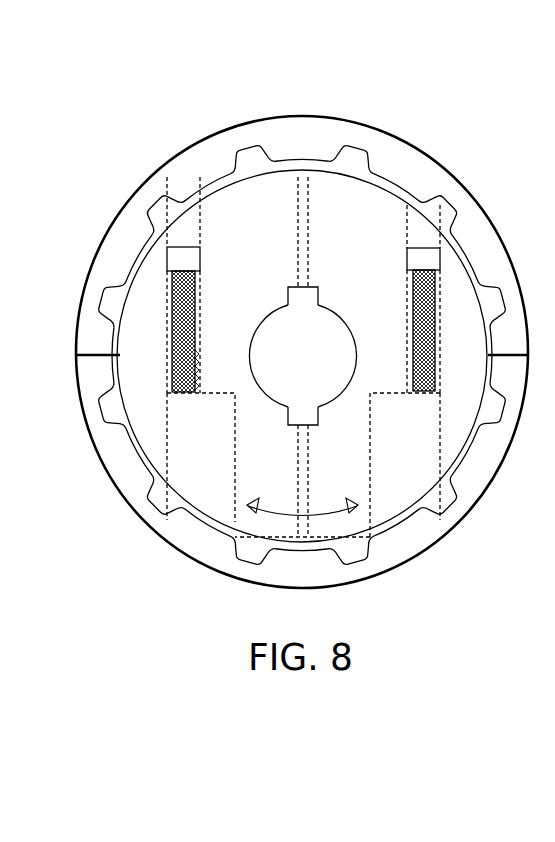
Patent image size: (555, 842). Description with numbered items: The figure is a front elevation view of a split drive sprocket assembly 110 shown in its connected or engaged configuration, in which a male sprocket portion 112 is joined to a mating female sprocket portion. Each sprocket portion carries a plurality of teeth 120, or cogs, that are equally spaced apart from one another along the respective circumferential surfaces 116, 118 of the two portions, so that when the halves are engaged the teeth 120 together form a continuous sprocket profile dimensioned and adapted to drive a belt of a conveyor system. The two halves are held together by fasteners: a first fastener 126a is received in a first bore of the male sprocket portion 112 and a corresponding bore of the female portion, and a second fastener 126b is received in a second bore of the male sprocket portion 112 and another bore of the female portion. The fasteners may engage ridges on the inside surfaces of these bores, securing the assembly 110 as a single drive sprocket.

The split drive sprocket assembly 110 is at (443, 115).
The male sprocket portion 112 is at (207, 197).
The circumferential surface 116 is at (140, 257).
The circumferential surface 118 is at (140, 450).
The teeth 120 is at (245, 143).
The first fastener 126a is at (167, 290).
The second fastener 126b is at (447, 267).